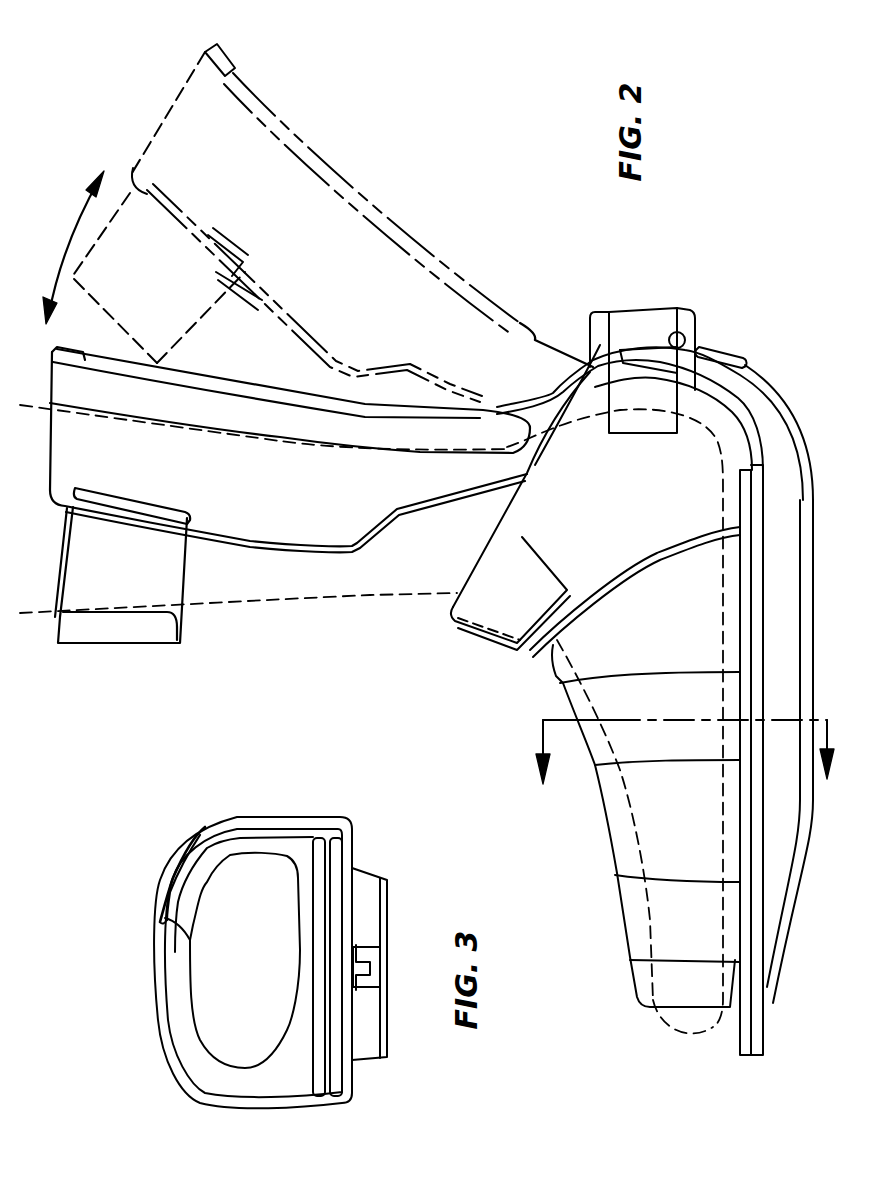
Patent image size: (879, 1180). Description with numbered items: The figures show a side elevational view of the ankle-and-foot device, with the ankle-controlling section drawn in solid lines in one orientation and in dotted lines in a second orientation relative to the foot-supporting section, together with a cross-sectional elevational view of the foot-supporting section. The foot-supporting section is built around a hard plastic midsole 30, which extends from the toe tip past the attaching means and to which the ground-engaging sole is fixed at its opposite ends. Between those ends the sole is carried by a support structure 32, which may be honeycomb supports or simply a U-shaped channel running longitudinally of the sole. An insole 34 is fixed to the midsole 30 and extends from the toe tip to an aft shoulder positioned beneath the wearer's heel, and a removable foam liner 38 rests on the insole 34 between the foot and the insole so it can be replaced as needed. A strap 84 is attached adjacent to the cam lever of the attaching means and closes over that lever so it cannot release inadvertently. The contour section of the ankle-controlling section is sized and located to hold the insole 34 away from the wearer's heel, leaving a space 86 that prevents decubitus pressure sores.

In FIG. 2, the midsole 30 is at (763, 1043).
In FIG. 2, the insole 34 is at (740, 1042).
In FIG. 2, the strap 84 is at (627, 312).
In FIG. 2, the space 86 is at (683, 400).
In FIG. 3, the foam liner 38 is at (307, 1043).
In FIG. 3, the support structure 32 is at (373, 987).